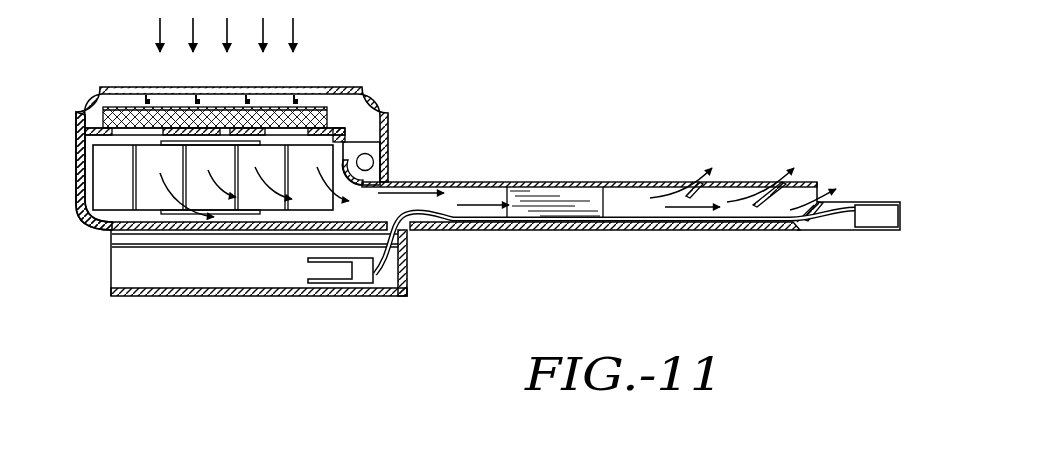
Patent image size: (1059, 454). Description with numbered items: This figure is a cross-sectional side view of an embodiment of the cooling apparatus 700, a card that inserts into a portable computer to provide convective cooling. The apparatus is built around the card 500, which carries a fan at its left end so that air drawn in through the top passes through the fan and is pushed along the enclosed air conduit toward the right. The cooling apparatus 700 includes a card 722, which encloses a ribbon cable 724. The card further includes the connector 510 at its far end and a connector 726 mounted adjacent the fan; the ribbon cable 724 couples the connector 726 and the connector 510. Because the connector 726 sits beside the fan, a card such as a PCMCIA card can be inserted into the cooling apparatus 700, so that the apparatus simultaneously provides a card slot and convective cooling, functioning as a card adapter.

The cooling apparatus 700 is at (483, 126).
The card 500 is at (78, 163).
The connector 510 is at (876, 205).
The card 722 is at (597, 182).
The ribbon cable 724 is at (430, 223).
The connector 726 is at (143, 297).